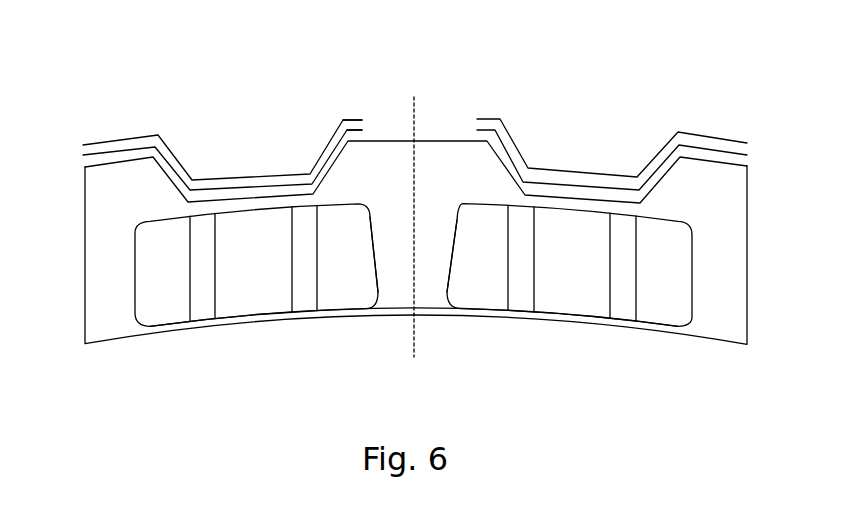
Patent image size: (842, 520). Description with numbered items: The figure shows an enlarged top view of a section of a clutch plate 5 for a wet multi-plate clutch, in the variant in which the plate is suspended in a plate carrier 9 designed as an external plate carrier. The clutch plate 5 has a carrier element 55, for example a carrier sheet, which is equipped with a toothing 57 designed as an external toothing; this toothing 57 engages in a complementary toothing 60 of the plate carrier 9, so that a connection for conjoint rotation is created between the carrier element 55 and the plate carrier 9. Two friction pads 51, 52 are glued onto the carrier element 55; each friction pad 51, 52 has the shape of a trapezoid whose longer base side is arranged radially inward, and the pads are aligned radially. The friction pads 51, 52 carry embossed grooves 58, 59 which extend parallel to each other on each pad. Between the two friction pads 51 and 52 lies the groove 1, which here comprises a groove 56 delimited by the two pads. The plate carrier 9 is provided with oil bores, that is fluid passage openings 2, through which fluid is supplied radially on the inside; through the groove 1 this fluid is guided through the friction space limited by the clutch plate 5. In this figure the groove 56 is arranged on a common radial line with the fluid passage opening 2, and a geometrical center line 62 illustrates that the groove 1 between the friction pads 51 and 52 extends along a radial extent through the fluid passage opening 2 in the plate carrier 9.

The groove 1 is at (431, 308).
The fluid passage opening 2 is at (404, 124).
The clutch plate 5 is at (703, 344).
The plate carrier 9 is at (704, 127).
The friction pad 51 is at (258, 296).
The friction pad 52 is at (582, 296).
The carrier element 55 is at (118, 292).
The groove 56 is at (445, 228).
The toothing 57 is at (187, 172).
The embossed groove 58 is at (533, 272).
The embossed groove 59 is at (634, 290).
The toothing 60 is at (328, 171).
The geometrical center line 62 is at (416, 100).